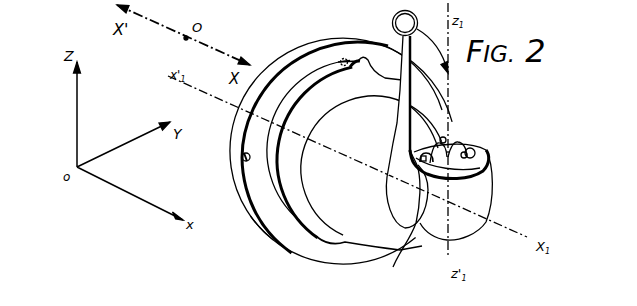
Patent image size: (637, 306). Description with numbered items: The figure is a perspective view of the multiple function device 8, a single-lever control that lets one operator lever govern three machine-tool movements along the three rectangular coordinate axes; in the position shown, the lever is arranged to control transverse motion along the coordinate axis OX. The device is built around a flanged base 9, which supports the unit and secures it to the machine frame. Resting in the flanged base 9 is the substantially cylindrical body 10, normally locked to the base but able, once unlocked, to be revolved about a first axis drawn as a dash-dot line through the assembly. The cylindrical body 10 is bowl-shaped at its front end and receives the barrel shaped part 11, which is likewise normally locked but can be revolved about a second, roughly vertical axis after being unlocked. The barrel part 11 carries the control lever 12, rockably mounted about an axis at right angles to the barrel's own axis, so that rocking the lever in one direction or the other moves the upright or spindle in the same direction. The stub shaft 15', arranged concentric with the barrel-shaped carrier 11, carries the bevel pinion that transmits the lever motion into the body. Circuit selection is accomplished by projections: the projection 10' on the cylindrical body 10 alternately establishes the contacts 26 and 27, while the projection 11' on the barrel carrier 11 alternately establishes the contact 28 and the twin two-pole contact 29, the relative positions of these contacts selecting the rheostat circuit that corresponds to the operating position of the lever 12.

The multiple function device 8 is at (262, 226).
The flanged base 9 is at (283, 58).
The cylindrical body 10 is at (354, 169).
The projection 10' is at (366, 47).
The barrel shaped part 11 is at (466, 192).
The projection 11' is at (407, 216).
The control lever 12 is at (401, 133).
The stub shaft 15' is at (463, 127).
The contact 26 is at (339, 60).
The contact 27 is at (248, 153).
The contact 28 is at (431, 152).
The twin two-pole contact 29 is at (469, 150).